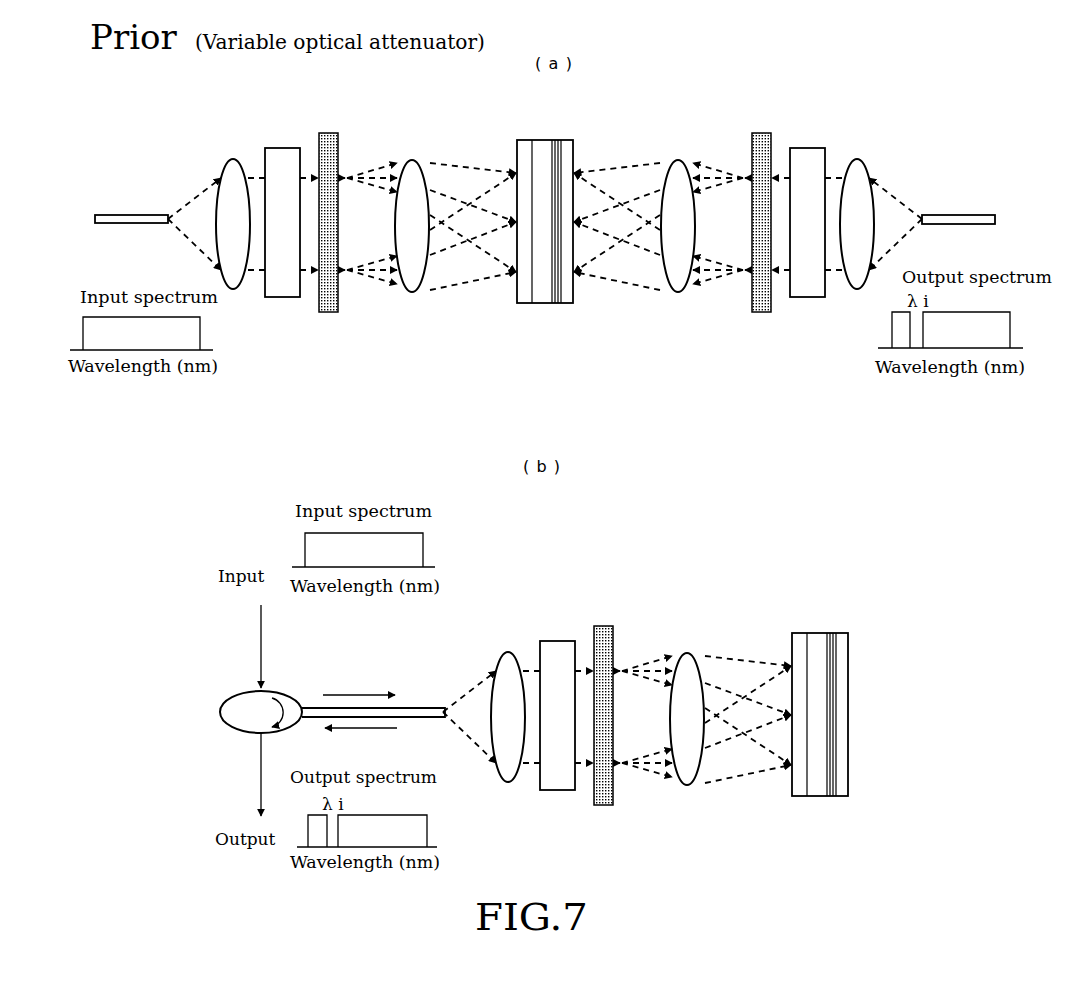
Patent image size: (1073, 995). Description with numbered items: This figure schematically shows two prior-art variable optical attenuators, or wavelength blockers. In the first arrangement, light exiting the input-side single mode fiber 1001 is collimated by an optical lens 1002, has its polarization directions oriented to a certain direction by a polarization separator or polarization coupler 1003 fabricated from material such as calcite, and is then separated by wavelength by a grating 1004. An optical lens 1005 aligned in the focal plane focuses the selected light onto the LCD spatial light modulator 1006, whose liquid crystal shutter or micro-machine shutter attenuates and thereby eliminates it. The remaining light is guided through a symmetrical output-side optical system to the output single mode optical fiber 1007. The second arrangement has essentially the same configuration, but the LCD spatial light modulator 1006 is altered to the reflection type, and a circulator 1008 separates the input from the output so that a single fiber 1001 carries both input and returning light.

The single mode fiber 1001 is at (131, 218).
The optical lens 1002 is at (232, 170).
The polarization separator or polarization coupler 1003 is at (288, 157).
The grating 1004 is at (328, 145).
The optical lens 1005 is at (413, 170).
The LCD spatial light modulator 1006 is at (543, 152).
The single mode optical fiber 1007 is at (950, 218).
The circulator 1008 is at (237, 710).